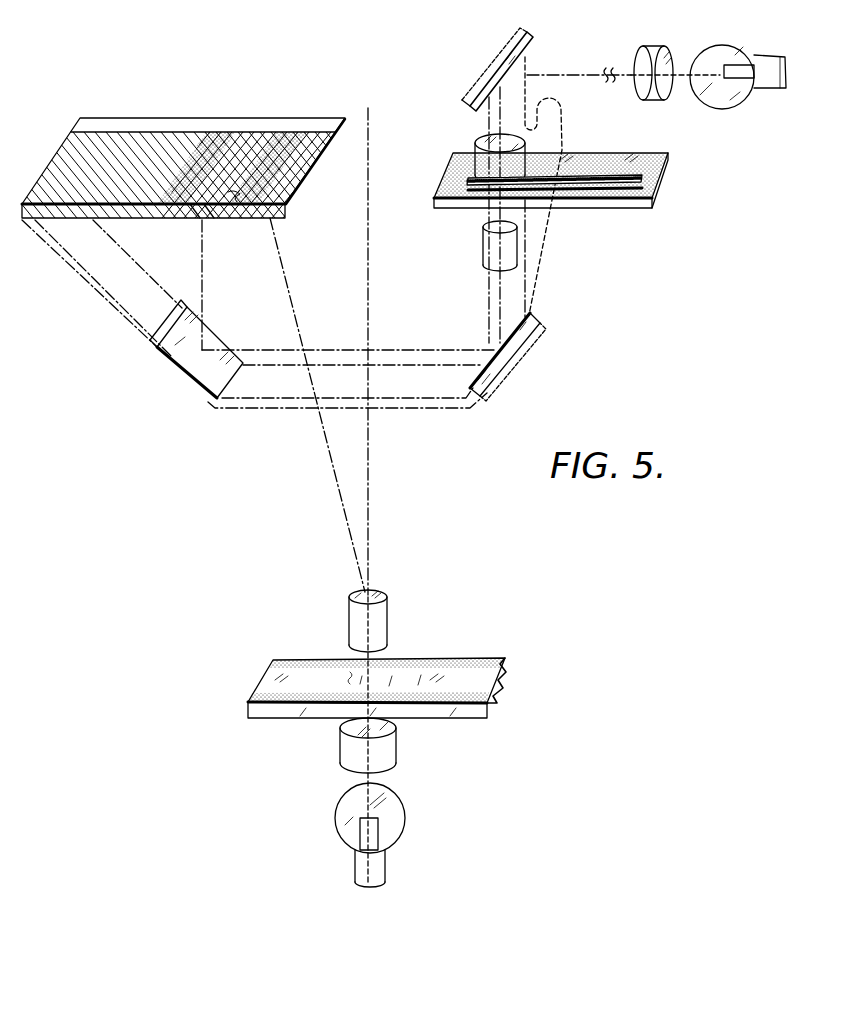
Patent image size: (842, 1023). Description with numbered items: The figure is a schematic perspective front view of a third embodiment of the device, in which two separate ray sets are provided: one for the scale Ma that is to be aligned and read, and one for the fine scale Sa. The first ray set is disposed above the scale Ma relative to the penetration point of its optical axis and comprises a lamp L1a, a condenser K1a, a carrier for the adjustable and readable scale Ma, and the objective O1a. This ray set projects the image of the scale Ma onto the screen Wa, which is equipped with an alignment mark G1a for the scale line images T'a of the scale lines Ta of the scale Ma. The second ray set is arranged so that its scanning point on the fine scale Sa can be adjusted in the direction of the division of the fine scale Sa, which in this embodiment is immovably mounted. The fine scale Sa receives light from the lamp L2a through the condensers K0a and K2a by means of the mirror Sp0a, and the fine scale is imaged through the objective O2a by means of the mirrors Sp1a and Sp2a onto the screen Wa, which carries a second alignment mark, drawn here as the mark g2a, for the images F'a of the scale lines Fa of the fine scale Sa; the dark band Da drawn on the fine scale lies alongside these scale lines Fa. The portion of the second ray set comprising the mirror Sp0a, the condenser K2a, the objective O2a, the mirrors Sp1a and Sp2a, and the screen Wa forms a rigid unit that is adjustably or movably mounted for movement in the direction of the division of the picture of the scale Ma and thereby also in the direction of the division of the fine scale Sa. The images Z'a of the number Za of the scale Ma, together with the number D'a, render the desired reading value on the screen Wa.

The screen Wa is at (119, 132).
The image of the number Z'a is at (204, 142).
The alignment mark G1a is at (248, 160).
The scale line image T'a is at (267, 148).
The grating line g2a is at (196, 219).
The image of the scale line of the fine scale F'a is at (214, 229).
The number D'a is at (245, 224).
The mirror Sp0a is at (493, 67).
The condenser K0a is at (649, 53).
The lamp L2a is at (720, 47).
The condenser K2a is at (476, 158).
The fine scale Sa is at (660, 165).
The scale line of the fine scale Fa is at (632, 183).
The diaphragm band D Da is at (652, 196).
The objective O2a is at (492, 250).
The mirror Sp2a is at (172, 356).
The mirror Sp1a is at (517, 356).
The objective O1a is at (357, 624).
The number Za is at (425, 672).
The scale line Ta is at (447, 688).
The scale Ma is at (494, 704).
The condenser K1a is at (347, 743).
The lamp L1a is at (342, 826).